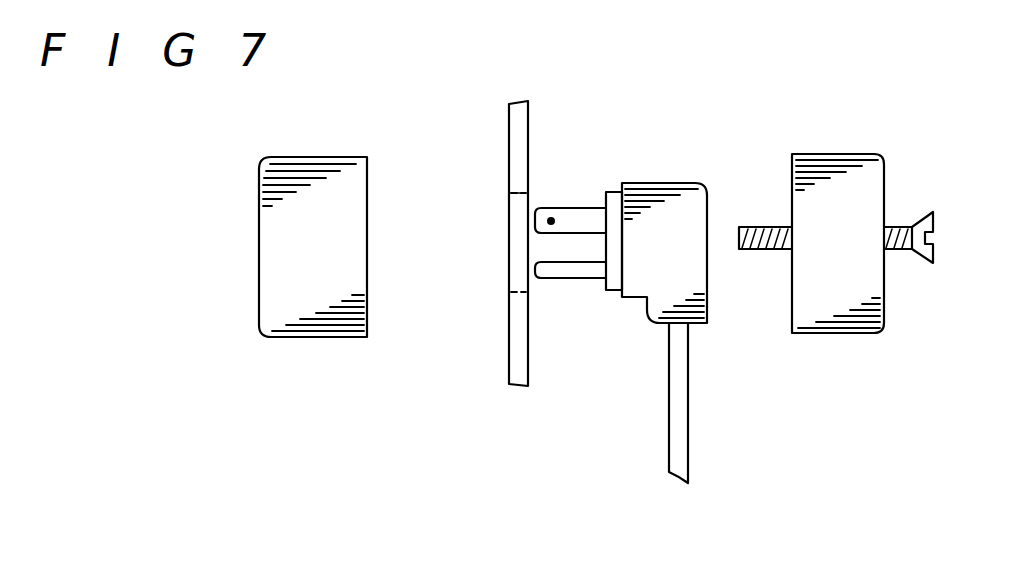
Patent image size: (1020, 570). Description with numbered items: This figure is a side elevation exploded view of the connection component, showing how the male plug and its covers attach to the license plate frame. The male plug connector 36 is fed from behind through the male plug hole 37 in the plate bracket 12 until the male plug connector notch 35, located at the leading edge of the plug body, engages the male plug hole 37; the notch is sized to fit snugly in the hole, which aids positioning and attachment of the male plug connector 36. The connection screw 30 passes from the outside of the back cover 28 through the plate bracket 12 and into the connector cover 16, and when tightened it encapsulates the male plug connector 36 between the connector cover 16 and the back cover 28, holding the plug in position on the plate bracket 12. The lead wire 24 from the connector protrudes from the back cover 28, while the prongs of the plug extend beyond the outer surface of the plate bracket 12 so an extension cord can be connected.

The plate bracket 12 is at (520, 123).
The connector cover 16 is at (326, 261).
The lead wire 24 is at (665, 427).
The back cover 28 is at (845, 220).
The connection screw 30 is at (913, 260).
The male plug connector notch 35 is at (613, 295).
The male plug connector 36 is at (653, 180).
The male plug hole 37 is at (508, 210).